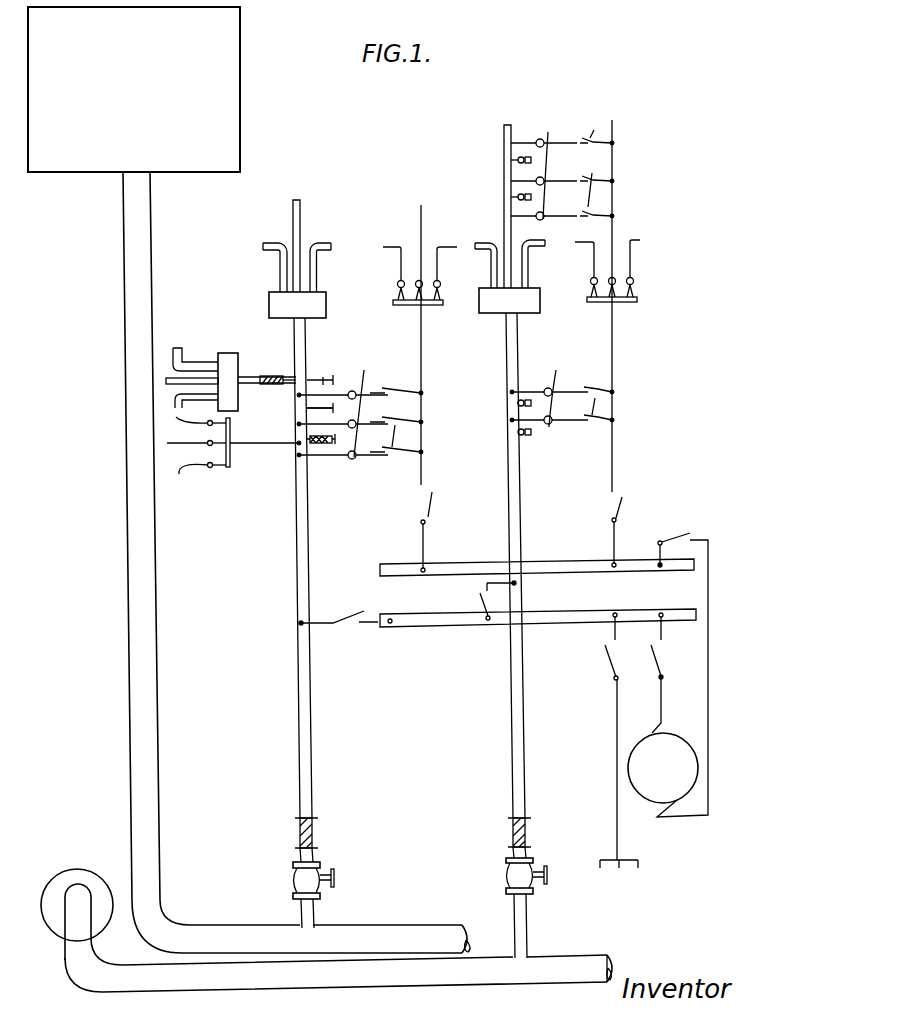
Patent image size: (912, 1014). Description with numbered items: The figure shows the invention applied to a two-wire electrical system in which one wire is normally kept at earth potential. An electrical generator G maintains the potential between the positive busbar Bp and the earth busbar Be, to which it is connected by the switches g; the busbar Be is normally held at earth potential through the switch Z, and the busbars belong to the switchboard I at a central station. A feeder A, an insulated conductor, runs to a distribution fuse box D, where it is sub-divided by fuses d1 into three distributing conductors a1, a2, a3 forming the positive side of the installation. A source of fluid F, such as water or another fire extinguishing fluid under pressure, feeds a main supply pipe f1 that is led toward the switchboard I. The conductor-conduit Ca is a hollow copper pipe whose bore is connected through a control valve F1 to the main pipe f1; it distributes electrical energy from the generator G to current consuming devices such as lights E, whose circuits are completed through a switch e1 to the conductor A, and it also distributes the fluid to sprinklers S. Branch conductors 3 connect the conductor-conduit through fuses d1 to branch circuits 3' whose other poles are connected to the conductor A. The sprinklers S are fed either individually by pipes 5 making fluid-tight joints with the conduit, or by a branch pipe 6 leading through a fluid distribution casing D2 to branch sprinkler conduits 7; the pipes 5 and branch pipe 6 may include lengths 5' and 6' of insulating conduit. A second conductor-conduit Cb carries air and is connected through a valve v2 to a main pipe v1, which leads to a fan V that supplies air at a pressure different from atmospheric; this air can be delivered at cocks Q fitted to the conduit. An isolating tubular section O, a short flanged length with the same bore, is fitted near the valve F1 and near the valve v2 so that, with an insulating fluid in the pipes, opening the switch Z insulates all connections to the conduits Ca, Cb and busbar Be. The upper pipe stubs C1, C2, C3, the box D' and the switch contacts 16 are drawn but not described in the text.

The source of fluid F is at (134, 89).
The main supply pipe f1 is at (131, 556).
The fan V is at (77, 882).
The main pipe v1 is at (487, 961).
The valve v2 is at (524, 880).
The branch pipe C1 is at (268, 247).
The branch pipe C2 is at (293, 224).
The branch pipe C3 is at (333, 238).
The conductor-conduit Ca is at (296, 528).
The conductor-conduit Cb is at (510, 755).
The distribution fuse box D is at (530, 300).
The distributor box D' is at (500, 312).
The fluid distribution casing D2 is at (228, 355).
The fuse d1 is at (400, 297).
The distributing conductor a1 is at (393, 247).
The distributing conductor a2 is at (421, 212).
The distributing conductor a3 is at (447, 245).
The feeder A is at (421, 368).
The light E is at (546, 134).
The switch e1 is at (492, 292).
The cock Q is at (516, 197).
The branch sprinkler conduit 7 is at (167, 380).
The branch pipe 6 is at (231, 369).
The length of insulating conduit 6' is at (279, 395).
The branch conductor 3 is at (234, 443).
The branch circuit 3' is at (193, 480).
The pipe 5 is at (320, 382).
The length of insulating conduit 5' is at (321, 455).
The sprinkler S is at (318, 406).
The switch 16 is at (429, 509).
The positive busbar Bp is at (592, 571).
The earth busbar Be is at (580, 623).
The switchboard I is at (676, 678).
The switch g is at (665, 540).
The switch Z is at (609, 660).
The electrical generator G is at (663, 768).
The isolating tubular section O is at (296, 830).
The control valve F1 is at (312, 878).